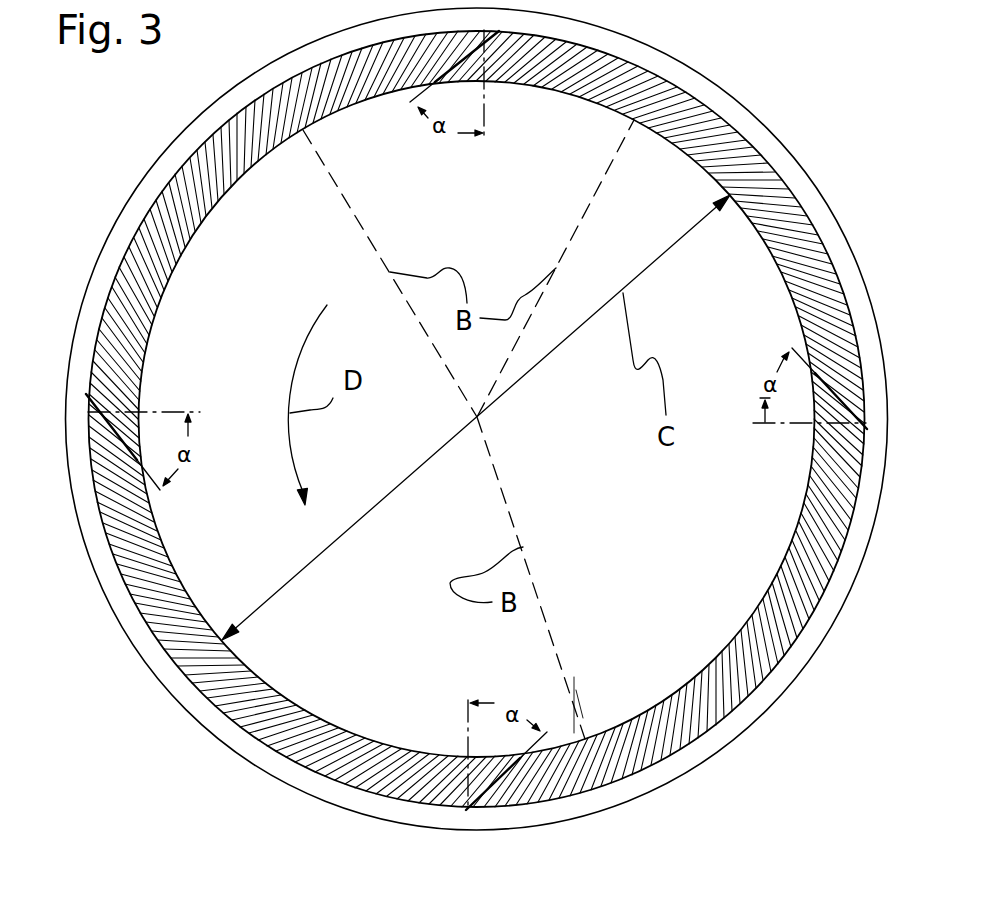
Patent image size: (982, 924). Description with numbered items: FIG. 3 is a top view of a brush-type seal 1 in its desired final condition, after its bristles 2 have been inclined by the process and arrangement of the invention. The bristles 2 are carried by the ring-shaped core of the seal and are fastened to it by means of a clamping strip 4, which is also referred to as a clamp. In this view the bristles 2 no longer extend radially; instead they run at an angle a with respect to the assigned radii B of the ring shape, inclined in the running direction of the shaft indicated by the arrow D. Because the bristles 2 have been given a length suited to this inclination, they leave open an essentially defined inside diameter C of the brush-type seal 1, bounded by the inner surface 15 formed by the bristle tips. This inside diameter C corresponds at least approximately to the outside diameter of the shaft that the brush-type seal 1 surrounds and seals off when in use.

The brush-type seal 1 is at (477, 457).
The bristles 2 is at (476, 420).
The clamping strip 4 is at (705, 95).
The inner sliding surface 15 is at (385, 735).